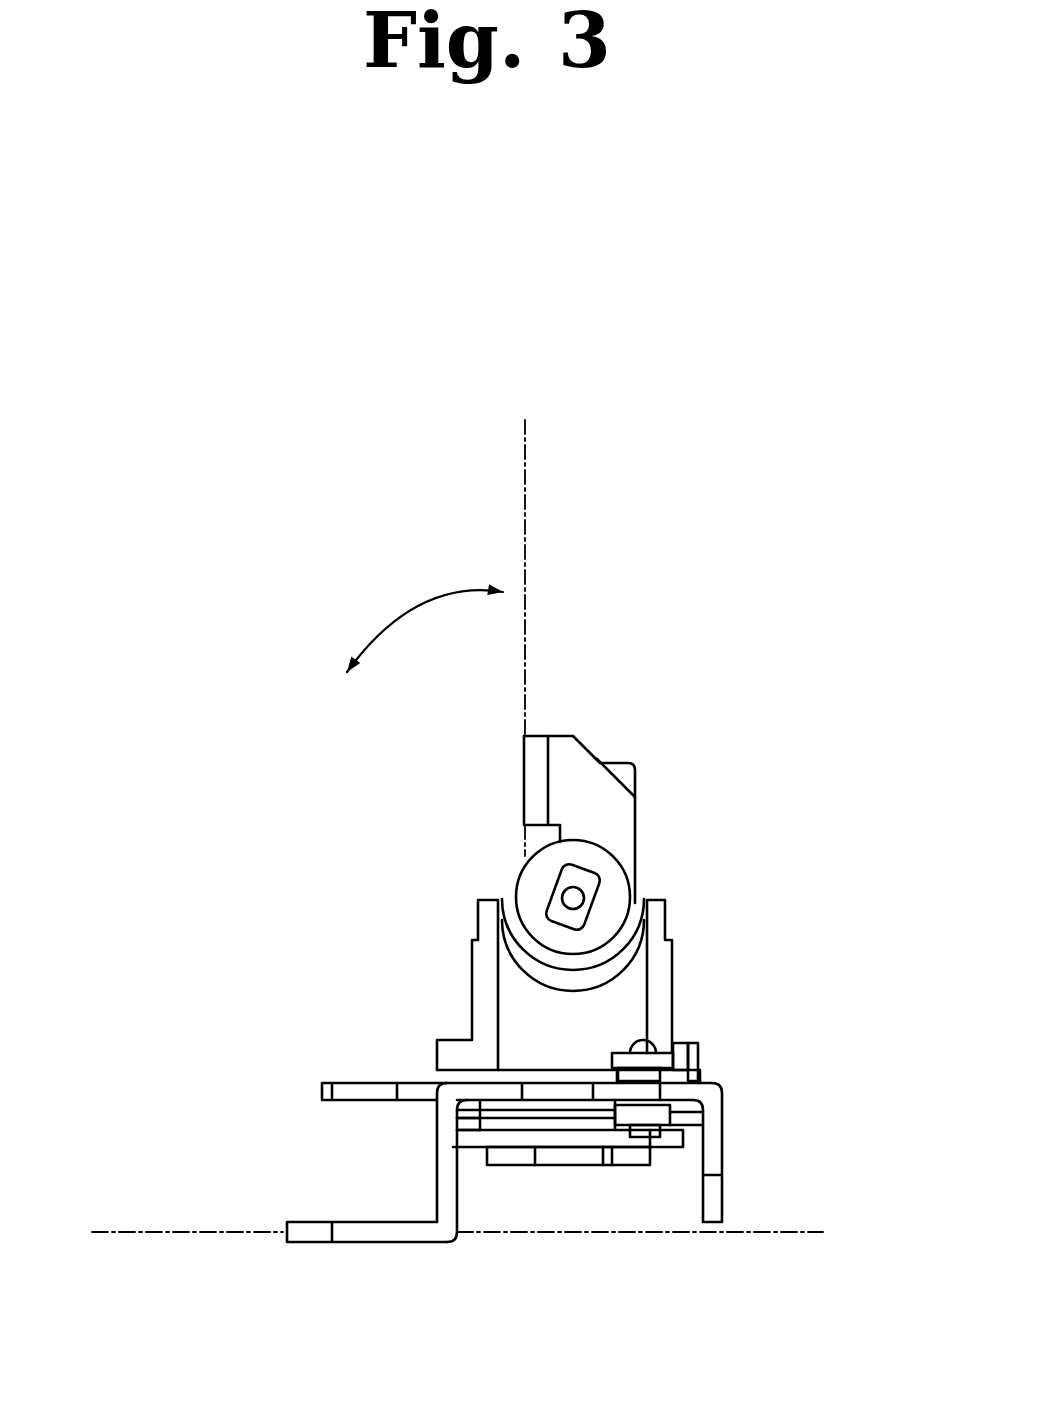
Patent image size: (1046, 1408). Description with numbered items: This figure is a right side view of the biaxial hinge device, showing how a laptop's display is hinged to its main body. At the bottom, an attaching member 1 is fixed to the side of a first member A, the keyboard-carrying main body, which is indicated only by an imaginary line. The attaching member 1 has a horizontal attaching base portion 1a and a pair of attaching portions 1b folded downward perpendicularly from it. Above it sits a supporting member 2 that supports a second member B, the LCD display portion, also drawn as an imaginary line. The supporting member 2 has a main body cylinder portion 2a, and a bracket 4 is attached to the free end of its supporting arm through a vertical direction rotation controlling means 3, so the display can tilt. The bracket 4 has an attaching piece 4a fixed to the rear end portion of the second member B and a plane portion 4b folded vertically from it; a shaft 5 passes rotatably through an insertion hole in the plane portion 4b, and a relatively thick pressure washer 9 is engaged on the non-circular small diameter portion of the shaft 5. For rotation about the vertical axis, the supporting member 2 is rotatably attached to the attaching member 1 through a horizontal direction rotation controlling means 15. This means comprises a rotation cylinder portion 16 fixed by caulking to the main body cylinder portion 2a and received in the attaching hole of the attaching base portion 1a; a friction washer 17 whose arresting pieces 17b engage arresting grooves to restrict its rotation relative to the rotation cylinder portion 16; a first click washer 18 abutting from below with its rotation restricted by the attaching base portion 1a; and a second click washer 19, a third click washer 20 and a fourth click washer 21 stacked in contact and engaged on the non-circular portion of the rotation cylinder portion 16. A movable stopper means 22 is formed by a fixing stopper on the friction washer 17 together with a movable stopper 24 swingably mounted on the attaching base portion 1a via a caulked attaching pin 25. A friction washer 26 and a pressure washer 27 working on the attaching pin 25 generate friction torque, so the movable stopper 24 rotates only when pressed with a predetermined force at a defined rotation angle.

The attaching member 1 is at (551, 1223).
The attaching base portion 1a is at (698, 1086).
The attaching portions 1b is at (374, 1242).
The supporting member 2 is at (575, 963).
The main body cylinder portion 2a is at (481, 992).
The vertical direction rotation controlling means 3 is at (553, 876).
The bracket 4 is at (581, 774).
The attaching piece 4a is at (532, 770).
The plane portion 4b is at (608, 850).
The shaft 5 is at (590, 877).
The pressure washer 9 is at (530, 893).
The horizontal direction rotation controlling means 15 is at (545, 1211).
The rotation cylinder portion 16 is at (568, 1157).
The friction washer 17 is at (520, 1070).
The arresting pieces 17b is at (696, 1058).
The first click washer 18 is at (480, 1110).
The second click washer 19 is at (472, 1150).
The third click washer 20 is at (698, 1132).
The fourth click washer 21 is at (666, 1133).
The movable stopper means 22 is at (678, 1040).
The movable stopper 24 is at (657, 1050).
The attaching pin 25 is at (628, 1050).
The friction washer 26 is at (680, 1093).
The pressure washer 27 is at (630, 1115).
The first member A is at (226, 1240).
The second member B is at (540, 565).